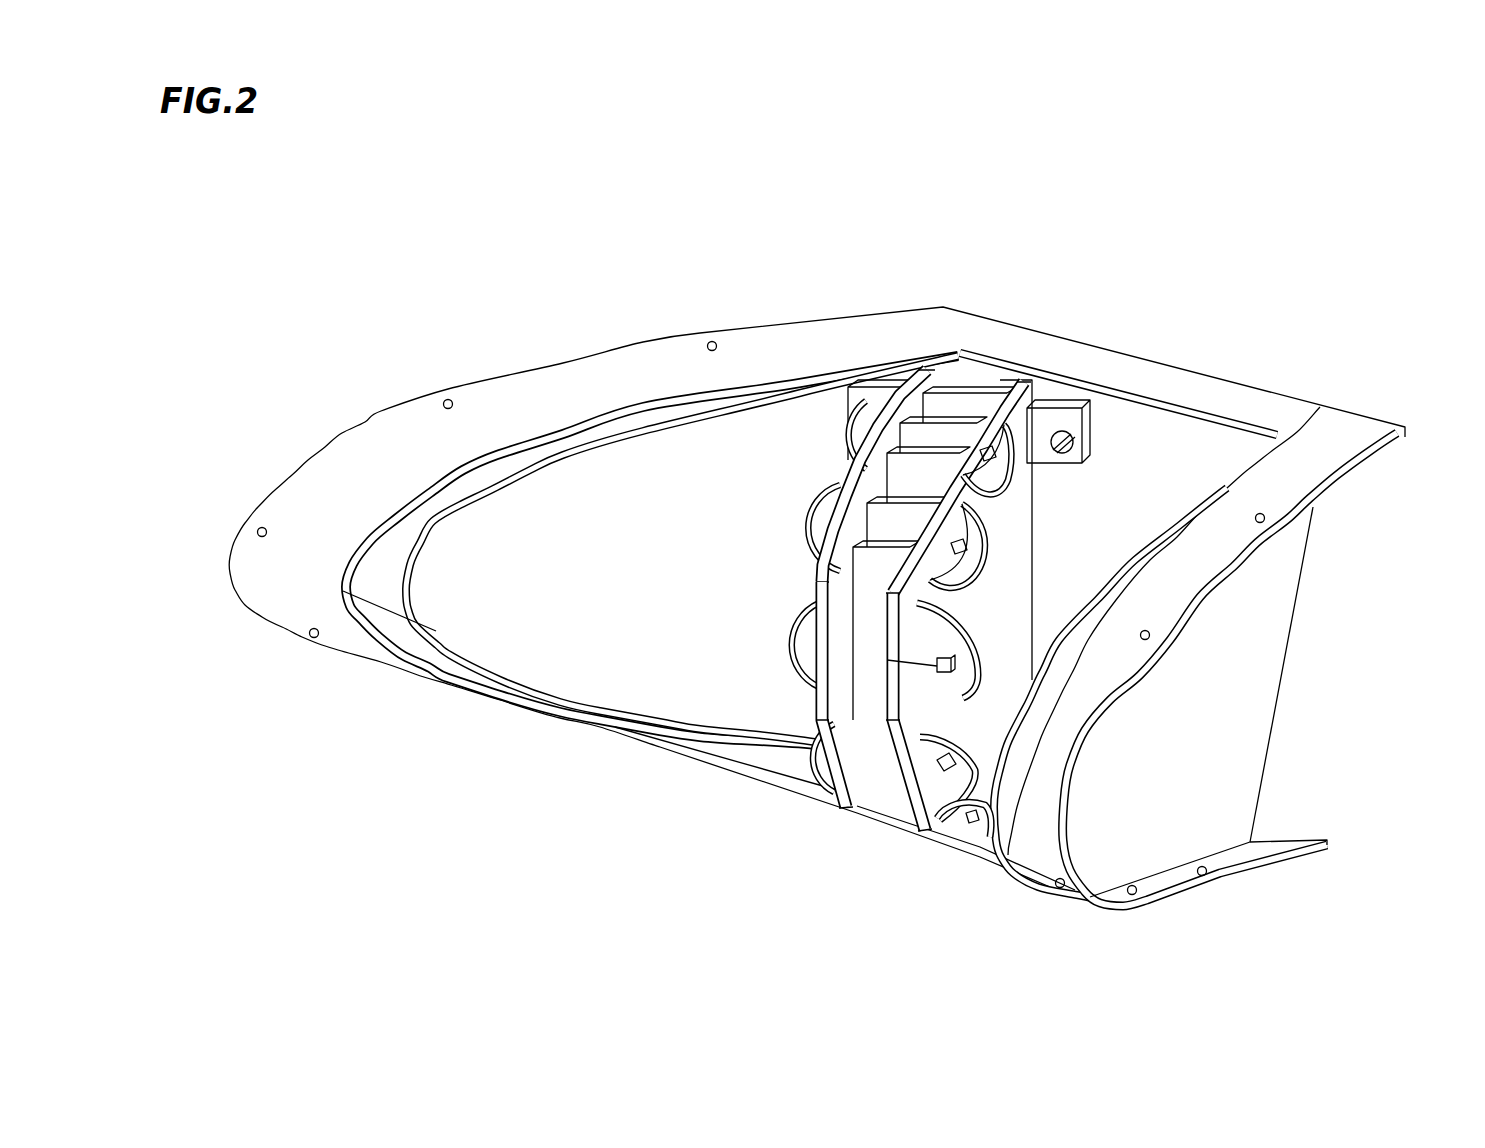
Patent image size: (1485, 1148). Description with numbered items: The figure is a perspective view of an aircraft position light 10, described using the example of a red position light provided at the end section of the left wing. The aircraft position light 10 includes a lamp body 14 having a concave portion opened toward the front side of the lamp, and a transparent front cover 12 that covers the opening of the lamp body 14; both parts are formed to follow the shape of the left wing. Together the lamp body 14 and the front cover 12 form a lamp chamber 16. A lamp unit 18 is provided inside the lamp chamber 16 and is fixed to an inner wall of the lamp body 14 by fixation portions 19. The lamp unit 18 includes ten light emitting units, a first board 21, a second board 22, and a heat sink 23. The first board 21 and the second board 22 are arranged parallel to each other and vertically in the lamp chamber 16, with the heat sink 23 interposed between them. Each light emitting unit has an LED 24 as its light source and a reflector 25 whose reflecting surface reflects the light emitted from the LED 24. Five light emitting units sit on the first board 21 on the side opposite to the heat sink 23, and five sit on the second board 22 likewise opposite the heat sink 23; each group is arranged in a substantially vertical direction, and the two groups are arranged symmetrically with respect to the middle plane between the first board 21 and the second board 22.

The aircraft position light 10 is at (800, 250).
The front cover 12 is at (418, 620).
The lamp body 14 is at (1193, 370).
The lamp chamber 16 is at (1160, 473).
The lamp unit 18 is at (736, 490).
The fixation portions 19 is at (876, 387).
The first board 21 is at (1017, 392).
The second board 22 is at (913, 392).
The heat sink 23 is at (972, 383).
The LED 24 is at (937, 666).
The reflector 25 is at (800, 653).